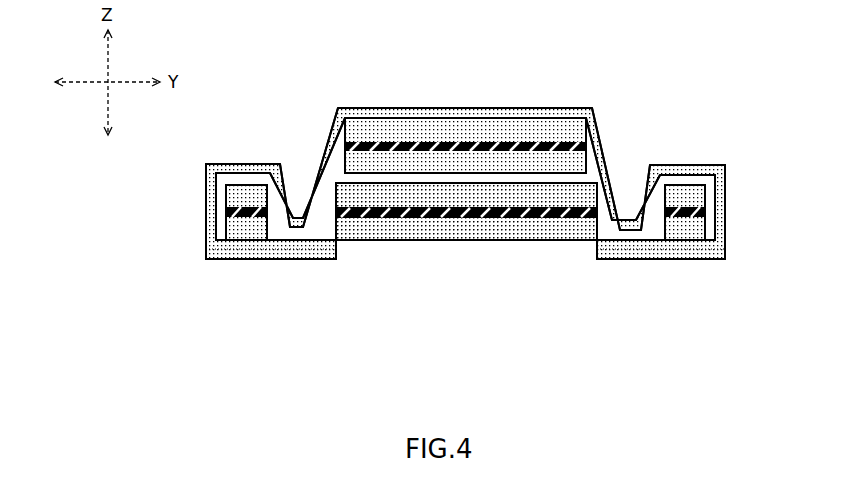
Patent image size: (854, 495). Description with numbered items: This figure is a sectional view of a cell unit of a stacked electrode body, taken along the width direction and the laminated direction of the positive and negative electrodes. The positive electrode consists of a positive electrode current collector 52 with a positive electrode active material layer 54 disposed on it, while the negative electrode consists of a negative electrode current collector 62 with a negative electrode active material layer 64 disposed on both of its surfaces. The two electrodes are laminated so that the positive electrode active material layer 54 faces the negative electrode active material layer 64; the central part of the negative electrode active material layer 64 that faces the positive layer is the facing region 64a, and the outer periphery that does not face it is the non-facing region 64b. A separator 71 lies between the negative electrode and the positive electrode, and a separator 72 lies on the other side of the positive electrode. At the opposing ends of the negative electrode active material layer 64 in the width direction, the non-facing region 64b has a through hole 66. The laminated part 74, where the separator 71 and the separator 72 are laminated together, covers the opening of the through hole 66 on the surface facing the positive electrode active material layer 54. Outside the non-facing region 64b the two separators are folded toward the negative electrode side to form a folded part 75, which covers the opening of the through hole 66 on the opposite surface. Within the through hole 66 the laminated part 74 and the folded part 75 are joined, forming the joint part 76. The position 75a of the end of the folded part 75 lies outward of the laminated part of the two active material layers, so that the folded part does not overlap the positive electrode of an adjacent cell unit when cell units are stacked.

The positive electrode current collector 52 is at (437, 148).
The positive electrode active material layer 54 is at (487, 158).
The negative electrode current collector 62 is at (478, 200).
The negative electrode active material layer 64 is at (402, 203).
The facing region 64a is at (445, 200).
The non-facing region 64b is at (333, 243).
The through hole 66 is at (272, 227).
The separator 71 is at (512, 183).
The separator 72 is at (370, 113).
The laminated part 74 is at (692, 155).
The folded part 75 is at (685, 267).
The position of end of folded part 75a is at (597, 259).
The joint part 76 is at (630, 188).